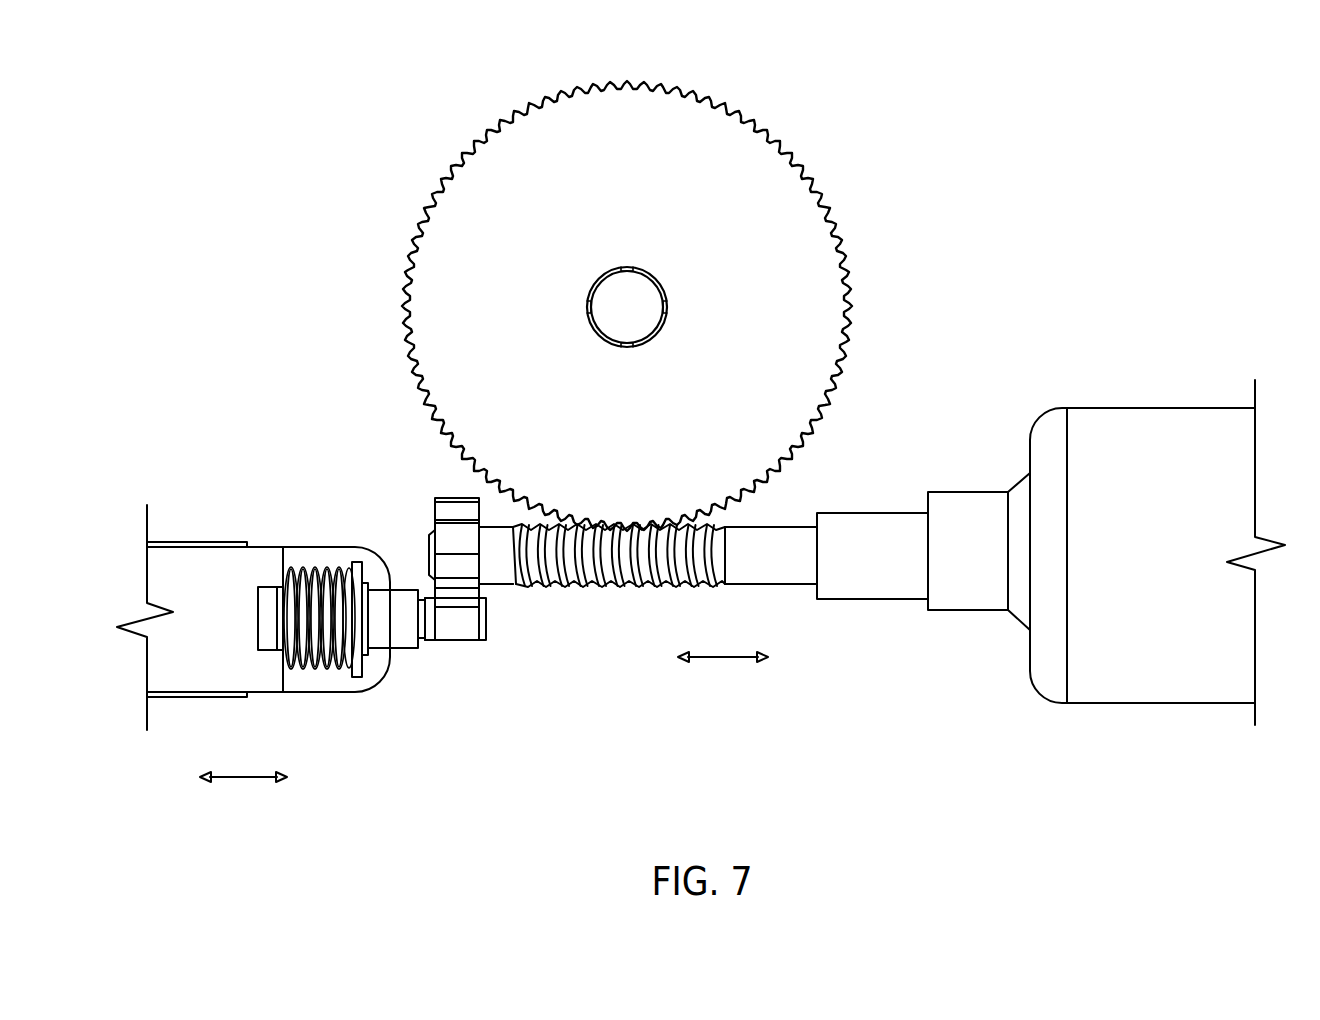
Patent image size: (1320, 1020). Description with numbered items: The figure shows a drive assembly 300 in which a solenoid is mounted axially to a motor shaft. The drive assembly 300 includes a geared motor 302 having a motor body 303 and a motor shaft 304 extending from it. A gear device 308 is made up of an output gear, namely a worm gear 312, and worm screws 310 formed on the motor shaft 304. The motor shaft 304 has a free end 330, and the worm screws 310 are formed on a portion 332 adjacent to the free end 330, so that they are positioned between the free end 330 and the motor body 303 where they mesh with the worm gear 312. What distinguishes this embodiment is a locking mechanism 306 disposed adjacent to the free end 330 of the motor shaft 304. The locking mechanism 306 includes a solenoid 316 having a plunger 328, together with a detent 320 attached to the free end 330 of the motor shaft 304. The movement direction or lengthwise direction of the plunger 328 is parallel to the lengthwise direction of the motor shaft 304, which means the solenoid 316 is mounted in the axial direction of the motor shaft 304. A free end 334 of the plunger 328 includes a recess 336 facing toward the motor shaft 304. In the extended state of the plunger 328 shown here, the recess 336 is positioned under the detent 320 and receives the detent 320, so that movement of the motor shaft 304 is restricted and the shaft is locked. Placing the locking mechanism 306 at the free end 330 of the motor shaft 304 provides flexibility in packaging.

The drive assembly 300 is at (701, 426).
The geared motor 302 is at (1157, 534).
The motor body 303 is at (1114, 447).
The motor shaft 304 is at (869, 603).
The locking mechanism 306 is at (325, 616).
The gear device 308 is at (627, 342).
The worm screws 310 is at (648, 580).
The worm gear 312 is at (705, 148).
The solenoid 316 is at (265, 698).
The detent 320 is at (458, 500).
The plunger 328 is at (469, 657).
The free end 330 is at (498, 573).
The portion 332 is at (686, 583).
The free end of the plunger 334 is at (447, 657).
The recess 336 is at (442, 608).